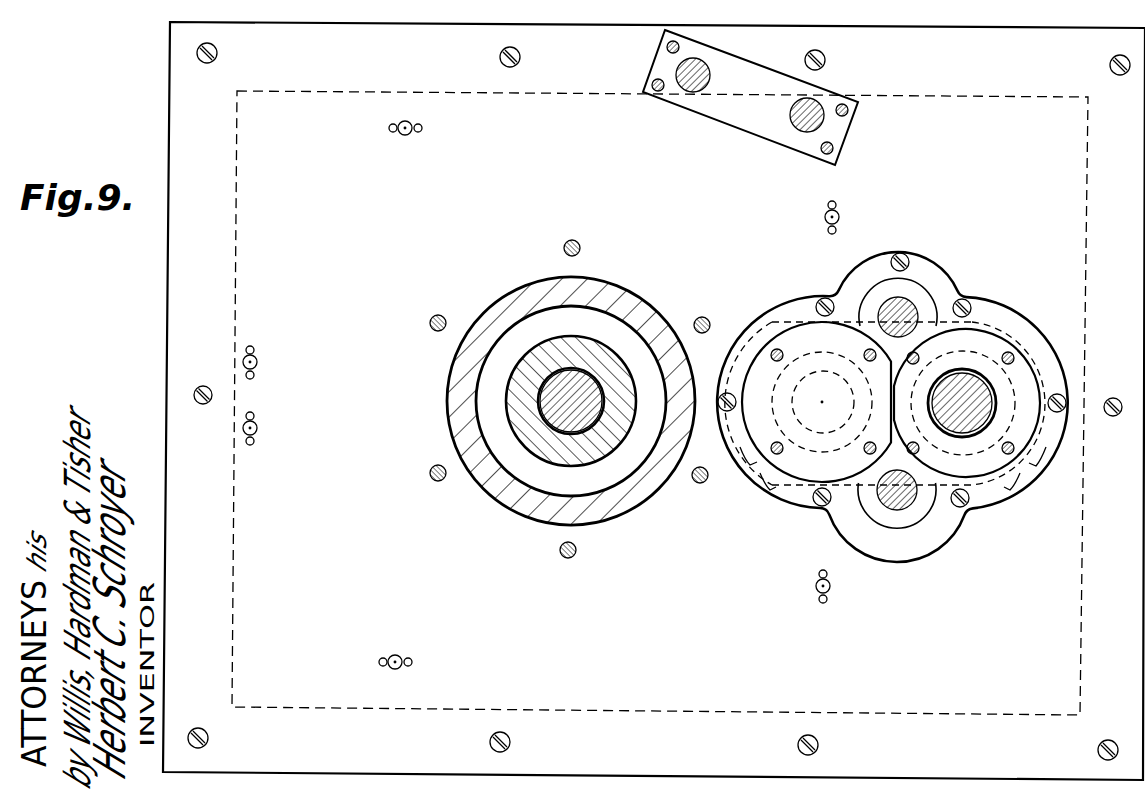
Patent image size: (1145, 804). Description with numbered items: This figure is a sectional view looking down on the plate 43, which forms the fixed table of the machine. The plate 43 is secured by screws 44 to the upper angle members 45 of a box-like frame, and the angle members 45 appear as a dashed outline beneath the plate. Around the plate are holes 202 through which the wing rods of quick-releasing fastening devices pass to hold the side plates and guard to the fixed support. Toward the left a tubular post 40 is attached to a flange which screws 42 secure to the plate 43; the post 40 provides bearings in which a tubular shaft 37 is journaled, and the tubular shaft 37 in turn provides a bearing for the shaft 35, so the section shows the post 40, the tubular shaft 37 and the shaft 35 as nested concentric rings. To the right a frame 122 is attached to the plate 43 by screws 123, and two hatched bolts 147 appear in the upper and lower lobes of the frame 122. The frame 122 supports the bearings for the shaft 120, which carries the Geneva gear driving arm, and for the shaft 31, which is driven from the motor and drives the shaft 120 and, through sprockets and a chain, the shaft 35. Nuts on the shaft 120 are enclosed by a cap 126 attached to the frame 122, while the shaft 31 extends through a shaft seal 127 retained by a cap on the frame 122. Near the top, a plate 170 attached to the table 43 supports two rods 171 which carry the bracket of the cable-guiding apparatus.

The plate 43 is at (170, 48).
The screws 44 is at (200, 62).
The upper angle members 45 is at (305, 92).
The hole 202 is at (405, 135).
The tubular post 40 is at (511, 298).
The screws 42 is at (436, 316).
The tubular shaft 37 is at (556, 340).
The shaft 35 is at (558, 412).
The frame 122 is at (775, 340).
The screws 123 is at (825, 298).
The bolts 147 is at (913, 307).
The shaft 120 is at (838, 430).
The shaft seal 127 is at (975, 366).
The shaft 31 is at (978, 398).
The cap 126 is at (800, 473).
The plate 170 is at (745, 130).
The rods 171 is at (790, 100).